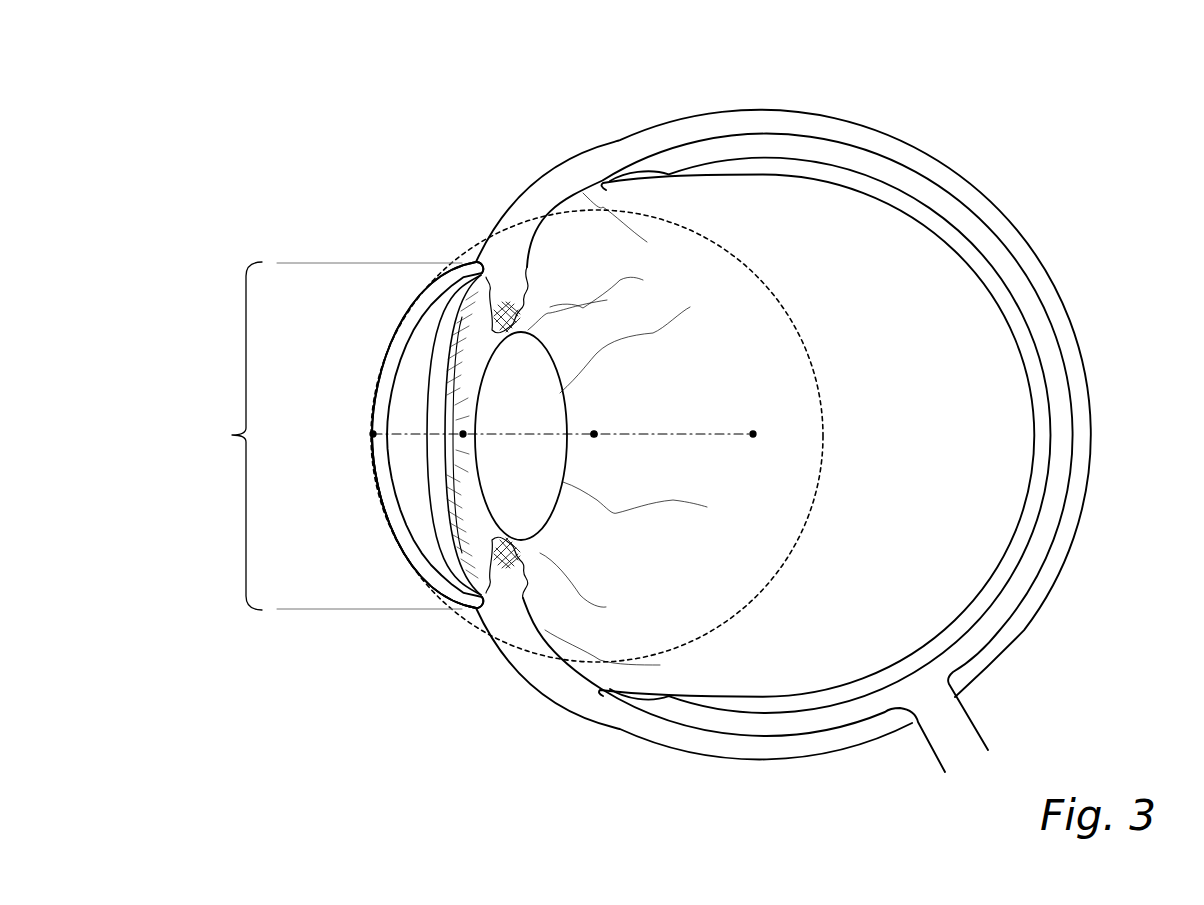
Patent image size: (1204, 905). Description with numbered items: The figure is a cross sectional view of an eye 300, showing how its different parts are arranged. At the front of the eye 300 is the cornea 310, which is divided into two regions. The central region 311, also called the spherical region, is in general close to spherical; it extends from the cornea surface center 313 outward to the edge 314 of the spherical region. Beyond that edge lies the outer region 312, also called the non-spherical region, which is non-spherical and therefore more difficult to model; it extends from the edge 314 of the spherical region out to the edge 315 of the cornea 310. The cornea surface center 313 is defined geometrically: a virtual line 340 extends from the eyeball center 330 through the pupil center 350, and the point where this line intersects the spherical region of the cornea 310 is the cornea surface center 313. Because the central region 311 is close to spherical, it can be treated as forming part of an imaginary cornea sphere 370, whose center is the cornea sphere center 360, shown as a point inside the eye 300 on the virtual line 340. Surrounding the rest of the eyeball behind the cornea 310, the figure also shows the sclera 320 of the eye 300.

The eye 300 is at (322, 104).
The cornea 310 is at (323, 436).
The central region 311 is at (375, 473).
The outer region 312 is at (432, 290).
The cornea surface center 313 is at (373, 434).
The edge of the spherical region 314 is at (400, 323).
The edge of the cornea 315 is at (470, 257).
The sclera 320 is at (545, 675).
The eyeball center 330 is at (753, 433).
The virtual line 340 is at (713, 434).
The pupil center 350 is at (463, 434).
The cornea sphere center 360 is at (594, 434).
The cornea sphere 370 is at (790, 550).